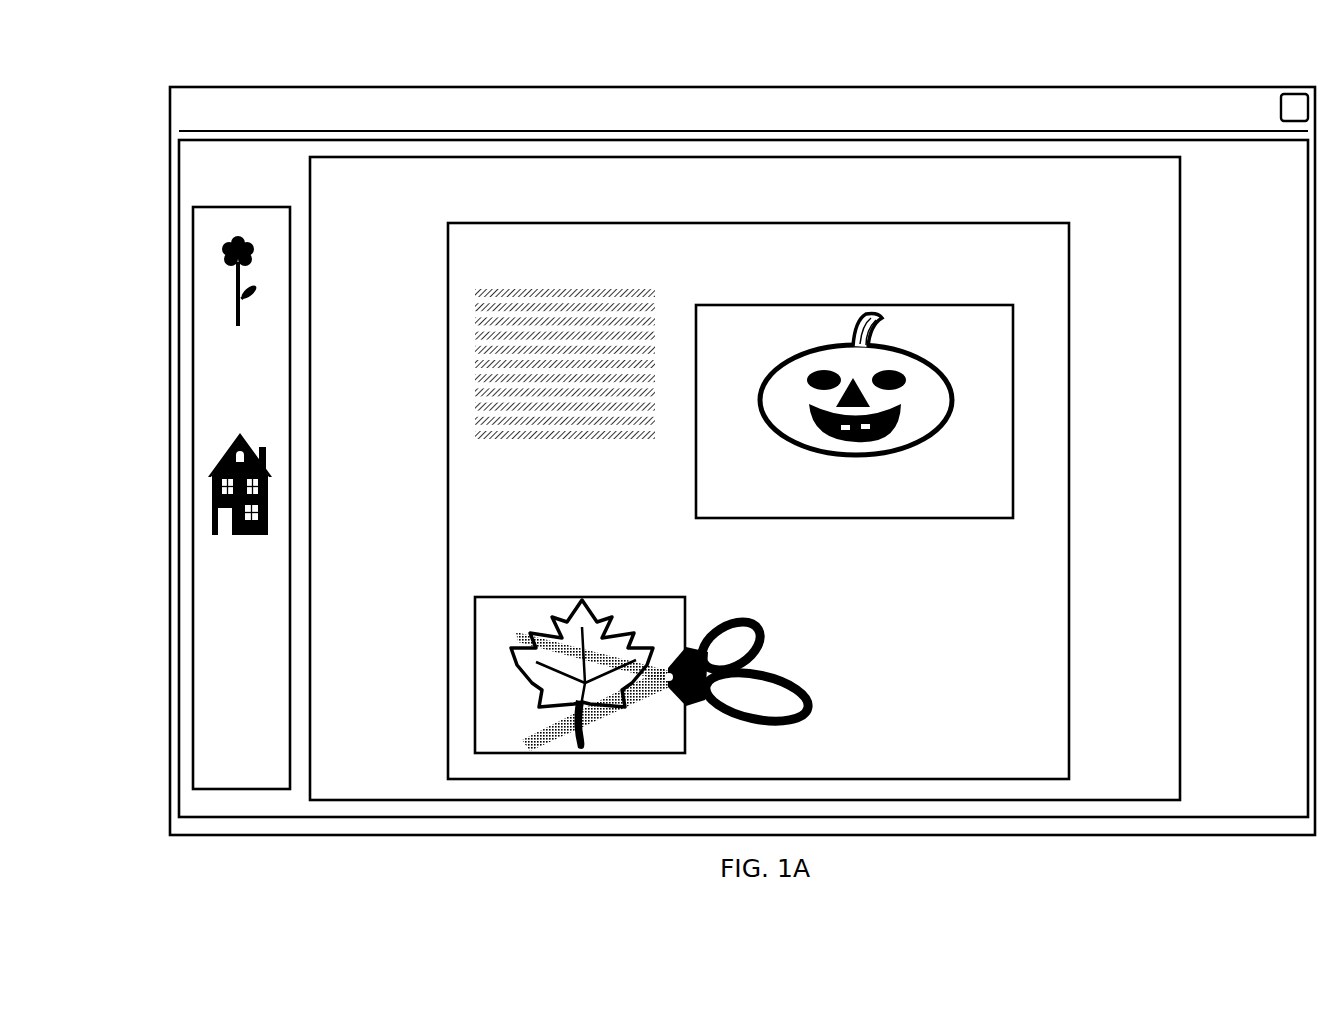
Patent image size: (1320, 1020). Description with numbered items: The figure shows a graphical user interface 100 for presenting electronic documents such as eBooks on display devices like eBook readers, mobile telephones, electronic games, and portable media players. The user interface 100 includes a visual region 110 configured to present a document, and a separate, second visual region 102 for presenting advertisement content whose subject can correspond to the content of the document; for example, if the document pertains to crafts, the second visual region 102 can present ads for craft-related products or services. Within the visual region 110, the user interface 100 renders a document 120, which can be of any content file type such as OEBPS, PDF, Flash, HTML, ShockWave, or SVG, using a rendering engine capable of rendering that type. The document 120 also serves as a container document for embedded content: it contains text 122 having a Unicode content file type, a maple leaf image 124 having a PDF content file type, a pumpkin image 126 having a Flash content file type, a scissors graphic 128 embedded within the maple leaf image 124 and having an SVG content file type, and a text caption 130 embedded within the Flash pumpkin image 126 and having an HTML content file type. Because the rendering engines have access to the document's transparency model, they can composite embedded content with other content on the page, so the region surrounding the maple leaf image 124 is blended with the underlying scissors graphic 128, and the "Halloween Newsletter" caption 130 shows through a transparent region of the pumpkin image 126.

The graphical user interface 100 is at (168, 46).
The second visual region 102 is at (193, 288).
The visual region 110 is at (310, 192).
The document 120 is at (448, 247).
The text 122 is at (556, 275).
The maple leaf image 124 is at (492, 657).
The pumpkin image 126 is at (934, 305).
The scissors graphic 128 is at (808, 698).
The text caption 130 is at (1002, 368).